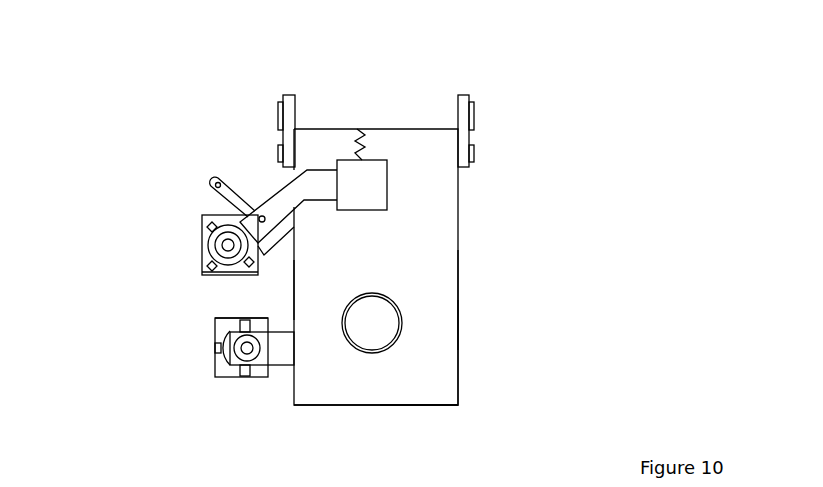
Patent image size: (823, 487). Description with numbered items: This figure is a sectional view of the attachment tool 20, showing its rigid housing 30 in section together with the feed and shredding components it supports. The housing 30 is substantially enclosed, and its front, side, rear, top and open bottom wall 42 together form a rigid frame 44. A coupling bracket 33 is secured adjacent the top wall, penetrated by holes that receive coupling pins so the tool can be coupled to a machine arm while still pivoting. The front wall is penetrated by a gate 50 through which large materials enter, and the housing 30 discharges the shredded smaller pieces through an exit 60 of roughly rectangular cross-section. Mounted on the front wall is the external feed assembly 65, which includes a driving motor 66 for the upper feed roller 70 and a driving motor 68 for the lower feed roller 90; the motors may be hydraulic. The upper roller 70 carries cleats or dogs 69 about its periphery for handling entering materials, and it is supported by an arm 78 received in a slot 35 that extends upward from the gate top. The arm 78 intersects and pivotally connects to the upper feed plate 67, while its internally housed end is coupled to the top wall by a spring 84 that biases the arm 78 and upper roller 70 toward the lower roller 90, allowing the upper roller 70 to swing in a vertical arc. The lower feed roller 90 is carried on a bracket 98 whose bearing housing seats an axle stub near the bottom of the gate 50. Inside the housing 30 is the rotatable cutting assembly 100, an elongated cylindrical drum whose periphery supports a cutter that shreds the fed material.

The attachment tool 20 is at (215, 26).
The rigid housing 30 is at (402, 78).
The coupling bracket 33 is at (291, 95).
The slot 35 is at (462, 95).
The housing bottom wall 42 is at (356, 129).
The spring 84 is at (368, 142).
The arm 78 is at (278, 198).
The upper feed plate 67 is at (216, 182).
The cleats or dogs 69 is at (211, 227).
The upper feed roller 70 is at (173, 252).
The driving motor 66 is at (225, 274).
The feed assembly 65 is at (215, 307).
The gate 50 is at (290, 290).
The lower feed roller 90 is at (237, 388).
The driving motor 68 is at (223, 378).
The bracket 98 is at (278, 350).
The rigid frame 44 is at (407, 405).
The exit 60 is at (463, 390).
The cutting assembly 100 is at (462, 303).